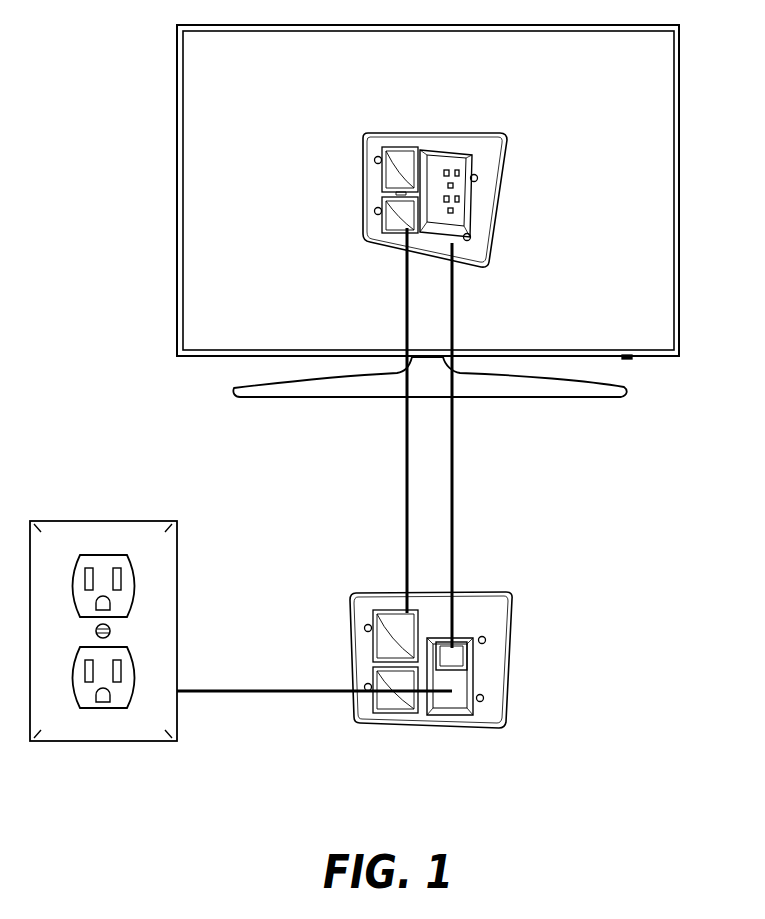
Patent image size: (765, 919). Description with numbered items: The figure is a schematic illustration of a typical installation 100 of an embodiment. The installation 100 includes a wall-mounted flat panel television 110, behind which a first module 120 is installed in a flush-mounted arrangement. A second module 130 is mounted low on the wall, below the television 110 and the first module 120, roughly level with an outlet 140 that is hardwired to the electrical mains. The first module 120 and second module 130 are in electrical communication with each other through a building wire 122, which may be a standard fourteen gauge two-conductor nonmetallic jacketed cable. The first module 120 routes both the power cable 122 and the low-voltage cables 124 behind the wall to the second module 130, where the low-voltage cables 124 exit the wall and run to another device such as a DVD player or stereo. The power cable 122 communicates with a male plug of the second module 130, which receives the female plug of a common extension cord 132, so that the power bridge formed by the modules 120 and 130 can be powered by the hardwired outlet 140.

The installation 100 is at (628, 478).
The wall-mounted flat panel television 110 is at (162, 303).
The first module 120 is at (480, 190).
The building wire 122 is at (452, 427).
The low-voltage cables 124 is at (406, 425).
The second module 130 is at (527, 614).
The extension cord 132 is at (287, 690).
The outlet 140 is at (187, 512).